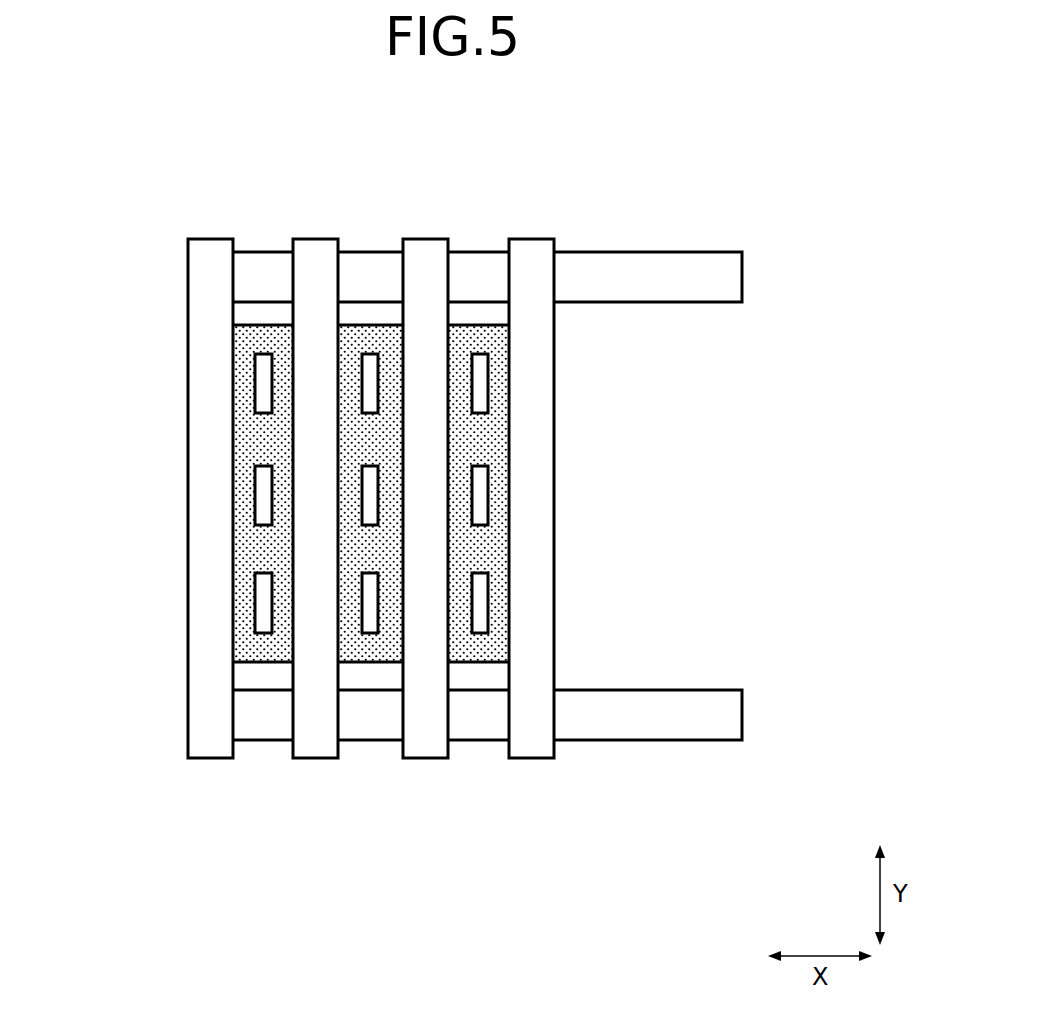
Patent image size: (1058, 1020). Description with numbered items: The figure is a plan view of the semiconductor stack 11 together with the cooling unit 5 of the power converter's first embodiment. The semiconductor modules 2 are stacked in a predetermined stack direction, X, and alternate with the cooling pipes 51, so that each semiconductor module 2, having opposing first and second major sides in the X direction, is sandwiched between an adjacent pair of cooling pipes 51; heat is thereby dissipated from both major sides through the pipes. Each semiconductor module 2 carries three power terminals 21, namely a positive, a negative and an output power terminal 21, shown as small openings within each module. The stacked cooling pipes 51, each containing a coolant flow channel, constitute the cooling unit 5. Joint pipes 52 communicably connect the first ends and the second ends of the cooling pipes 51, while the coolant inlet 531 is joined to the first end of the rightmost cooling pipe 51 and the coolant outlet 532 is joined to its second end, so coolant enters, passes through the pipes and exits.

The semiconductor module 2 is at (258, 552).
The cooling unit 5 is at (486, 499).
The semiconductor stack 11 is at (394, 190).
The power terminal 21 is at (262, 492).
The cooling pipe 51 is at (203, 243).
The joint pipe 52 is at (470, 268).
The coolant inlet 531 is at (722, 718).
The coolant outlet 532 is at (718, 279).